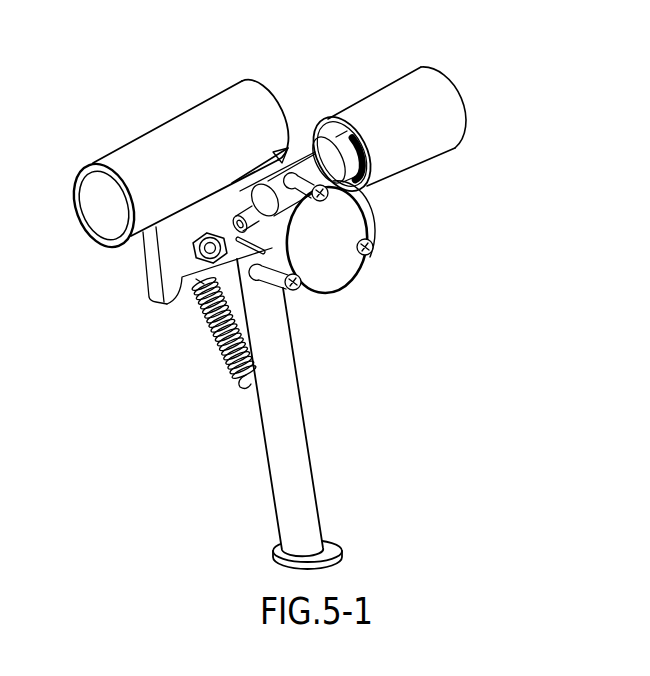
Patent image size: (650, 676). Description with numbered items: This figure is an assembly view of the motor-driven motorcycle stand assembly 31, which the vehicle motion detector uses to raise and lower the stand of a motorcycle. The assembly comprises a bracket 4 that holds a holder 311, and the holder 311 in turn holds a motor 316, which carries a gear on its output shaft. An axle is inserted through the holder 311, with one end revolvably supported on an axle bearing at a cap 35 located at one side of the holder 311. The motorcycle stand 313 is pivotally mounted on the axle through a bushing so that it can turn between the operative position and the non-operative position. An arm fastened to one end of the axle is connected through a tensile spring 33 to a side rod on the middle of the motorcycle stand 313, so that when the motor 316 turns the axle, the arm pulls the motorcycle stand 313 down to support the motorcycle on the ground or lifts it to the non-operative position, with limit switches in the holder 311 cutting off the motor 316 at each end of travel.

The bracket 4 is at (176, 251).
The motor-driven motorcycle stand assembly 31 is at (375, 310).
The holder 311 is at (311, 150).
The motorcycle stand 313 is at (306, 518).
The motor 316 is at (453, 130).
The tensile spring 33 is at (210, 357).
The cap 35 is at (320, 285).